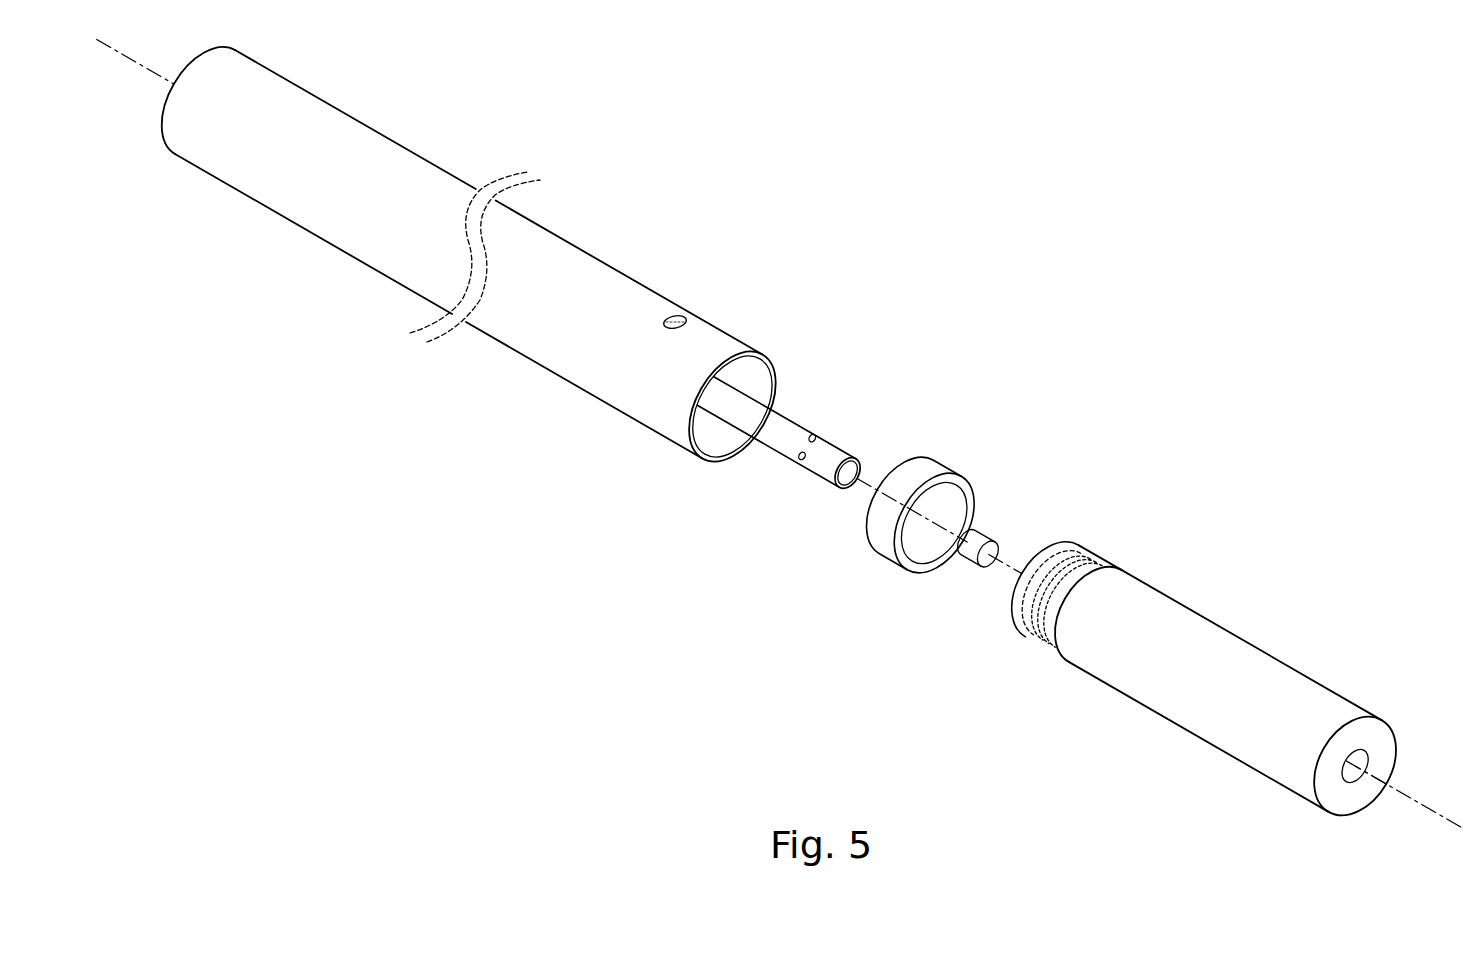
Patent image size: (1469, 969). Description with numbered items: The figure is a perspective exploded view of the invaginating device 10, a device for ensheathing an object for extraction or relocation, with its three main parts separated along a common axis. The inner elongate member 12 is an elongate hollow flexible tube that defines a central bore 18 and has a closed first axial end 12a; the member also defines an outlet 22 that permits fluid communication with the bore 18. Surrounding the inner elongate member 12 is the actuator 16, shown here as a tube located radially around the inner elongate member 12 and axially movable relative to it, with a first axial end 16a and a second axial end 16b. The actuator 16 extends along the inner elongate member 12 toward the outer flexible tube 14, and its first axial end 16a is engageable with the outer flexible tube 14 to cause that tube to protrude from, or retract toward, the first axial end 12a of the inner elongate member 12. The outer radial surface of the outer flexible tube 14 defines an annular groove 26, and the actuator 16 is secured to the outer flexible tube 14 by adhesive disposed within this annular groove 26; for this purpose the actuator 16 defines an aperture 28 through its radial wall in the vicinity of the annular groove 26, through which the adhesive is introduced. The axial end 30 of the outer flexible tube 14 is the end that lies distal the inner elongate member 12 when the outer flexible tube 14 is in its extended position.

The invaginating device 10 is at (1097, 425).
The inner elongate member 12 is at (786, 436).
The first axial end 12a is at (860, 462).
The outer flexible tube 14 is at (1273, 677).
The actuator 16 is at (594, 277).
The first axial end 16a is at (716, 460).
The second axial end 16b is at (168, 112).
The central bore 18 is at (853, 485).
The outlet 22 is at (812, 436).
The annular groove 26 is at (1093, 570).
The aperture 28 is at (680, 315).
The axial end 30 is at (1377, 749).